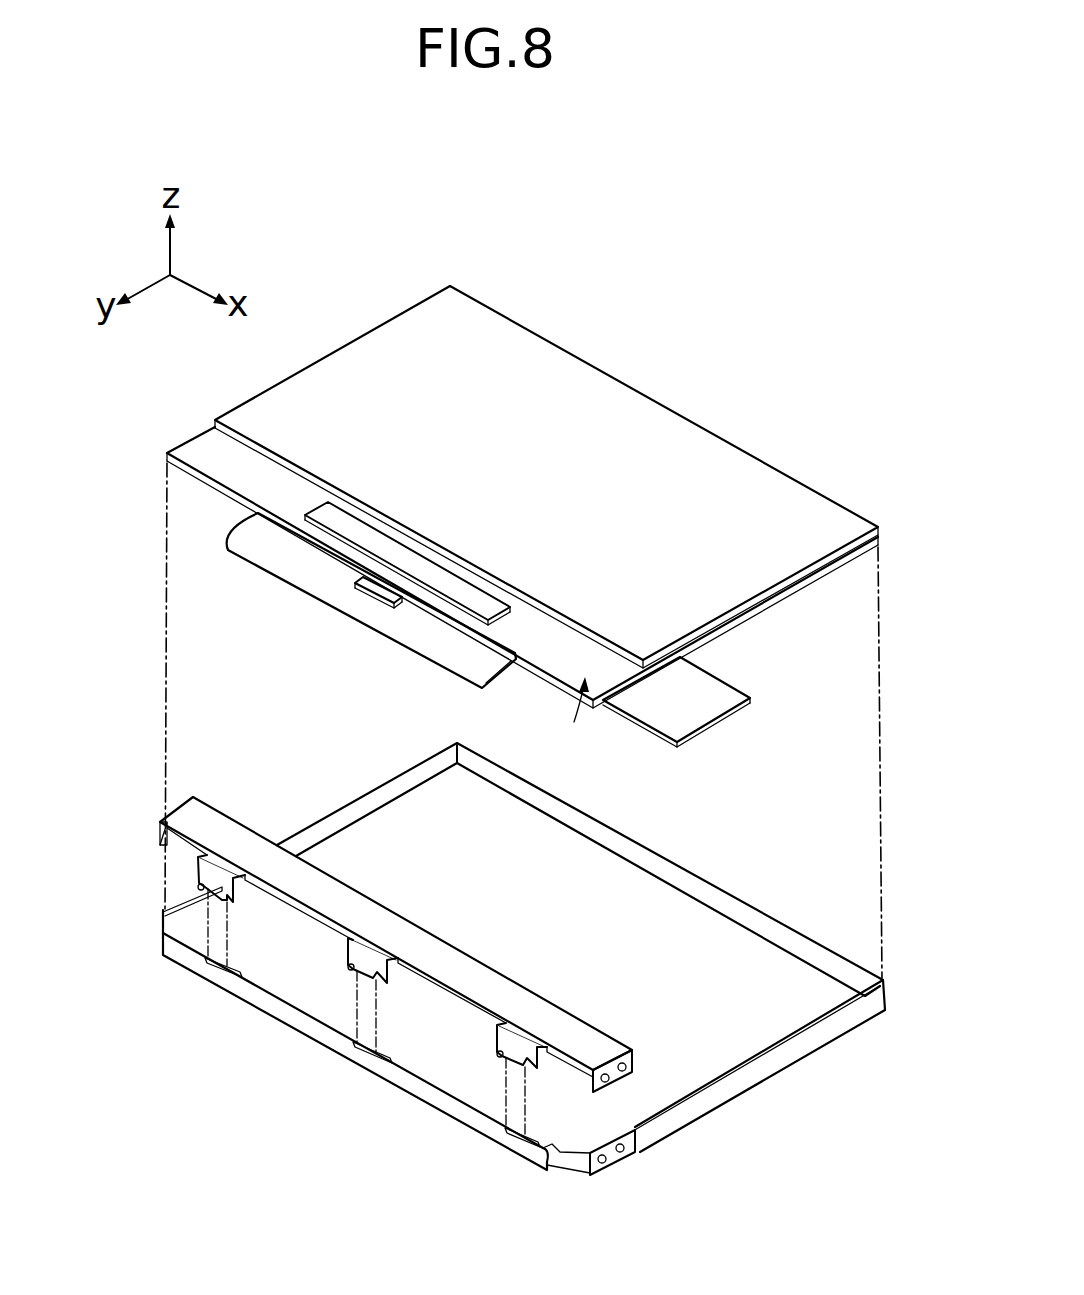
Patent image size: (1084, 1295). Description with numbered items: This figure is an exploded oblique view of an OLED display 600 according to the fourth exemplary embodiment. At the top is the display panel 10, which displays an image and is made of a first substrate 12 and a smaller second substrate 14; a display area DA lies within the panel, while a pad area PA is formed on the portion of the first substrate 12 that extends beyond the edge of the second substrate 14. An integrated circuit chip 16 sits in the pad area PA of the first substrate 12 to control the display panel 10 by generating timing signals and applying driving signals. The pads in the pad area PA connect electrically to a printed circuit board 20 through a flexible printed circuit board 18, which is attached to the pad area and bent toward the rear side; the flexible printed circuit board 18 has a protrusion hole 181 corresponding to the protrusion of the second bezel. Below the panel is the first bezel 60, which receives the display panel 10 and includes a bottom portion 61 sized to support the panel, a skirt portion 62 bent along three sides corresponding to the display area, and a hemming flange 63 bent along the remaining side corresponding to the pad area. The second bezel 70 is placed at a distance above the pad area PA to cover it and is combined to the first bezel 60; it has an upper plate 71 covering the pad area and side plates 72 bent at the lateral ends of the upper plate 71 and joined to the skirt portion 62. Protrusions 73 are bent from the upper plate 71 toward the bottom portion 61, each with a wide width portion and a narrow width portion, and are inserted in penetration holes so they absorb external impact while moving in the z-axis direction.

The OLED display 600 is at (314, 254).
The display panel 10 is at (790, 470).
The first substrate 12 is at (760, 612).
The second substrate 14 is at (792, 583).
The integrated circuit chip 16 is at (338, 512).
The flexible printed circuit board 18 is at (278, 560).
The protrusion hole 181 is at (362, 590).
The printed circuit board 20 is at (700, 707).
The first bezel 60 is at (712, 887).
The bottom portion 61 is at (743, 1030).
The skirt portion 62 is at (728, 1087).
The hemming flange 63 is at (407, 1082).
The second bezel 70 is at (158, 800).
The upper plate 71 is at (203, 815).
The side plate 72 is at (608, 1078).
The protrusion 73 is at (222, 887).